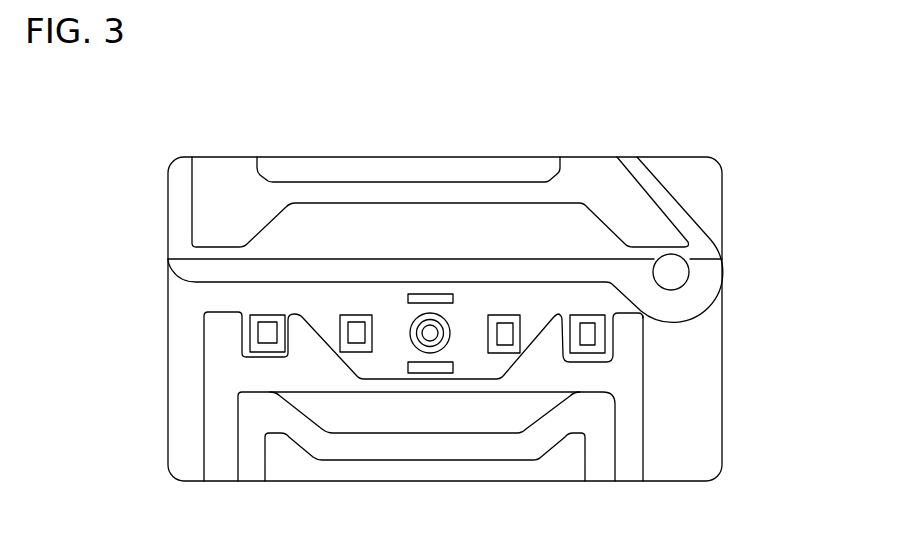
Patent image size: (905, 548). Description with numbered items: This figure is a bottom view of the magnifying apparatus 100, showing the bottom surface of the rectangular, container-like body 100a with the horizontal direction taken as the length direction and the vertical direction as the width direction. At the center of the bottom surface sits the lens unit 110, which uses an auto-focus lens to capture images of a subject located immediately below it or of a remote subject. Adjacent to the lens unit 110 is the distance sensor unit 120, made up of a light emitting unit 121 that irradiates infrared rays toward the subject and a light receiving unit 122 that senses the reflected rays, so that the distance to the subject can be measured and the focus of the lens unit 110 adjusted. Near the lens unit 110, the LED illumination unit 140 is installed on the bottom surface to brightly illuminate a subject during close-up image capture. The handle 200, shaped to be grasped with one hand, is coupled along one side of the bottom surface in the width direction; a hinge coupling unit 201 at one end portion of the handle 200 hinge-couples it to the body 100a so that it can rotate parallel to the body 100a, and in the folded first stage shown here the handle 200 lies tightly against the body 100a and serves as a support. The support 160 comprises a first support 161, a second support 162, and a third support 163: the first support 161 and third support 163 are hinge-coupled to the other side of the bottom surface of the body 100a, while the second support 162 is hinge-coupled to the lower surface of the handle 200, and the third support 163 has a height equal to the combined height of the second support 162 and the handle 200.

The magnifying apparatus 100 is at (733, 443).
The body 100a is at (723, 395).
The lens unit 110 is at (426, 332).
The distance sensor unit 120 is at (473, 421).
The light emitting unit 121 is at (440, 373).
The light receiving unit 122 is at (447, 303).
The LED illumination unit 140 is at (595, 333).
The support 160 is at (358, 319).
The first support 161 is at (356, 436).
The second support 162 is at (202, 208).
The third support 163 is at (220, 388).
The handle 200 is at (475, 197).
The hinge coupling unit 201 is at (677, 268).